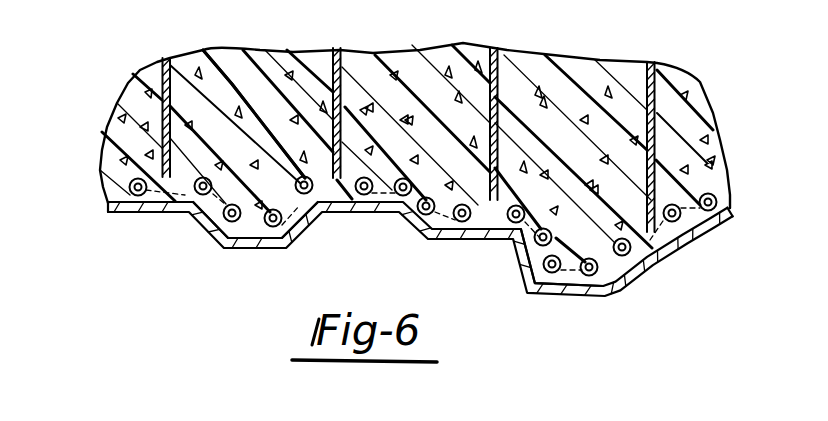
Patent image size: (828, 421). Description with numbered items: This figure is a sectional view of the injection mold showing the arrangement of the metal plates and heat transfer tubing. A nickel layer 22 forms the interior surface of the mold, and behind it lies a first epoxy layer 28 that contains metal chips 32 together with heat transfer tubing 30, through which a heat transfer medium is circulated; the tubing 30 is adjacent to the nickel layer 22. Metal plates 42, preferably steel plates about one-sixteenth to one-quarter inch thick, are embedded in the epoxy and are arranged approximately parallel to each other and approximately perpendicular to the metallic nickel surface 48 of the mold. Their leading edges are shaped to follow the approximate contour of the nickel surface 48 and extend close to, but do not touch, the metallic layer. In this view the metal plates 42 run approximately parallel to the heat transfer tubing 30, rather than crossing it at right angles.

The first epoxy layer 28 is at (127, 77).
The metal chips 32 is at (228, 83).
The metal plates 42 is at (499, 64).
The heat transfer tubing 30 is at (131, 193).
The nickel layer 22 is at (255, 248).
The nickel surface 48 is at (530, 296).